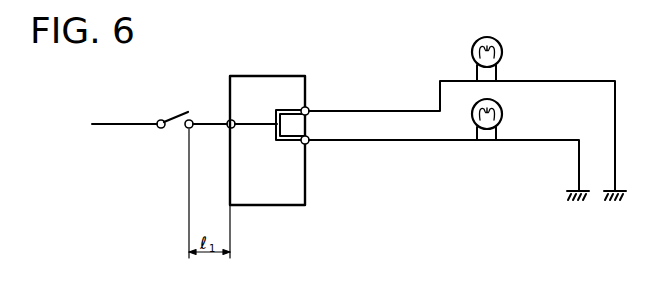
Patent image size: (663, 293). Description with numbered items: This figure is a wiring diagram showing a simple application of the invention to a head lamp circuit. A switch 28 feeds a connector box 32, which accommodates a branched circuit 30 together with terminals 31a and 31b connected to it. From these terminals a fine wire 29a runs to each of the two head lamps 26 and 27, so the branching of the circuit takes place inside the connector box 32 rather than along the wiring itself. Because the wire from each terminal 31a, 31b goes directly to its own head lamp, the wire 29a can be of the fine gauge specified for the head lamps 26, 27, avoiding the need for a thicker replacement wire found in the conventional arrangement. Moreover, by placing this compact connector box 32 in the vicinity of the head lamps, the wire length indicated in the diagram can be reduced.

The head lamp 26 is at (499, 59).
The head lamp 27 is at (499, 119).
The switch 28 is at (192, 113).
The wire 29a is at (395, 98).
The branched circuit 30 is at (237, 127).
The terminal 31a is at (323, 103).
The terminal 31b is at (323, 150).
The connector box 32 is at (267, 140).